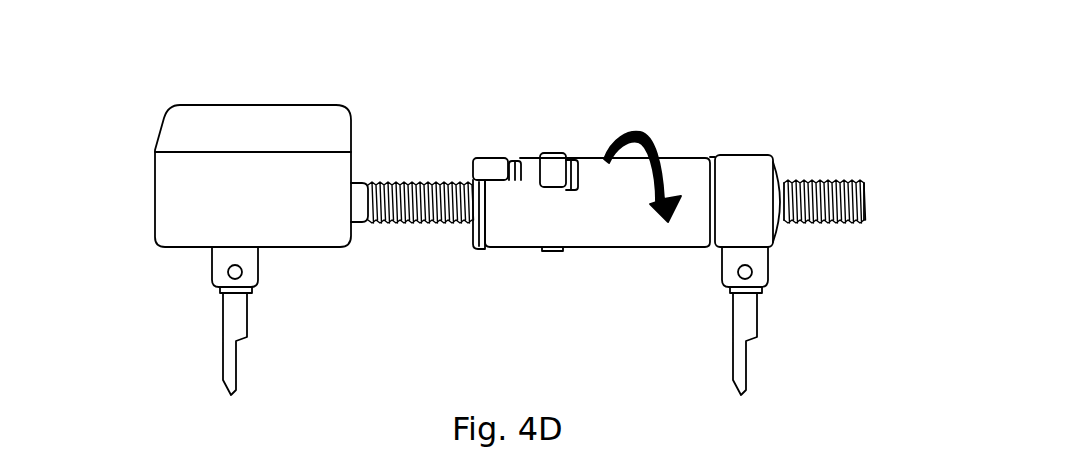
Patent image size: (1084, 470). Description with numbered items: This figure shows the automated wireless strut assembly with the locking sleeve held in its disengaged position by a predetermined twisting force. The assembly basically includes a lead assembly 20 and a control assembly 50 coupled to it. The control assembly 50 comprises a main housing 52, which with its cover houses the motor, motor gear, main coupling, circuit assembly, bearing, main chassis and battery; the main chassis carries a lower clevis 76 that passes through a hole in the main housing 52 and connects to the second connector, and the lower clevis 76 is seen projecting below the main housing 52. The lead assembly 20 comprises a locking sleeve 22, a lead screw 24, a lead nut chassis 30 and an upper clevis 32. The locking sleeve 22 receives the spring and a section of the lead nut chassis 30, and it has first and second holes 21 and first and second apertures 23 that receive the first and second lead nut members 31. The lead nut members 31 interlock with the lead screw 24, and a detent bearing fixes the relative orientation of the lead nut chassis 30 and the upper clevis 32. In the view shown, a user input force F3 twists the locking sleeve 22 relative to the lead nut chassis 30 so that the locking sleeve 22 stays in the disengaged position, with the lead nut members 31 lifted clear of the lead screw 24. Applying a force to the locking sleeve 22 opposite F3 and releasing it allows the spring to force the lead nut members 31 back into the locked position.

The lead assembly 20 is at (926, 140).
The first and second holes 21 is at (573, 158).
The locking sleeve 22 is at (611, 237).
The first and second apertures 23 is at (516, 165).
The lead screw 24 is at (414, 183).
The lead nut chassis 30 is at (782, 178).
The lead nut members 31 is at (488, 158).
The upper clevis 32 is at (742, 158).
The control assembly 50 is at (92, 111).
The main housing 52 is at (170, 213).
The lower clevis 76 is at (220, 272).